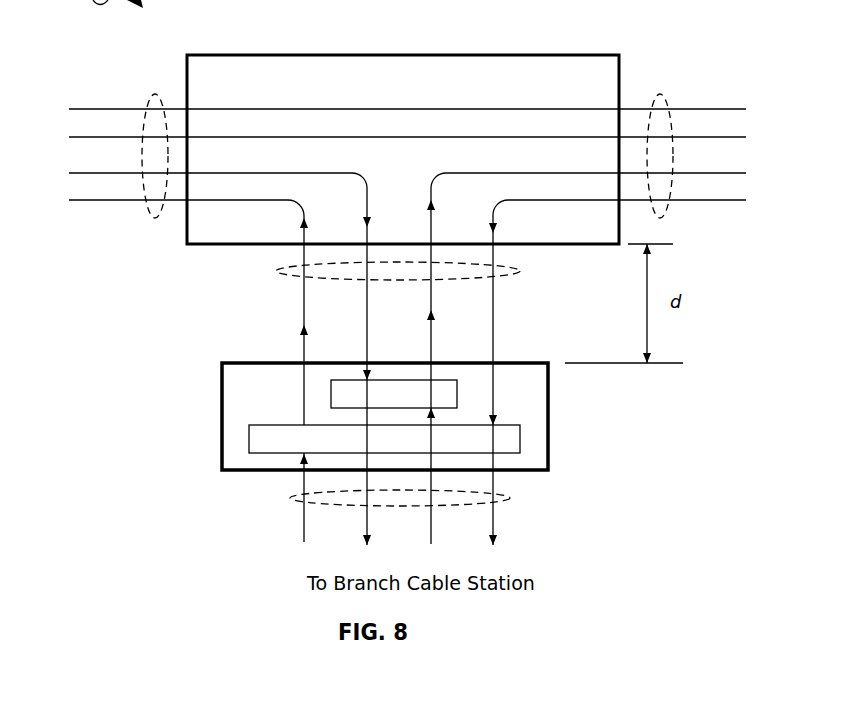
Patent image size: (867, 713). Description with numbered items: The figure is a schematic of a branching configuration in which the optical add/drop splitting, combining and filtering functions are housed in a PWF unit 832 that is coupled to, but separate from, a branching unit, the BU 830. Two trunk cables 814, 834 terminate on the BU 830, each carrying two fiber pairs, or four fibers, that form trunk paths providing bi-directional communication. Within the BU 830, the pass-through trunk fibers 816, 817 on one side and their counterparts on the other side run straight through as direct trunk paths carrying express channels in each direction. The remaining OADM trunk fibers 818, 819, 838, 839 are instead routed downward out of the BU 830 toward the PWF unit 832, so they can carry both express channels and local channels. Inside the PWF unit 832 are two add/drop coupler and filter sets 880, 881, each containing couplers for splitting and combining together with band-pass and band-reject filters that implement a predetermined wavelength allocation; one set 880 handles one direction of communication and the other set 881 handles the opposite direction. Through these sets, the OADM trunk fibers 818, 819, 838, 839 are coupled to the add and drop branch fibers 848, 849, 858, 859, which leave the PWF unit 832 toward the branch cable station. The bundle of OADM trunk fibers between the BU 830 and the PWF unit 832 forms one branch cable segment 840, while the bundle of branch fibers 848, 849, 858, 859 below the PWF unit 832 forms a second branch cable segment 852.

The BU 830 is at (374, 54).
The trunk cable 814 is at (156, 93).
The trunk cable 834 is at (661, 94).
The pass-through trunk fiber 816 is at (88, 108).
The pass-through trunk fiber 817 is at (83, 136).
The OADM trunk fiber 818 is at (92, 172).
The OADM trunk fiber 819 is at (85, 199).
The OADM trunk fiber 838 is at (712, 172).
The OADM trunk fiber 839 is at (714, 199).
The branch cable segment 840 is at (288, 268).
The PWF unit 832 is at (222, 422).
The add/drop coupler and filter set 880 is at (394, 394).
The add/drop coupler and filter set 881 is at (384, 439).
The branch cable segment 852 is at (296, 501).
The branch fiber 859 is at (300, 517).
The branch fiber 848 is at (362, 526).
The branch fiber 858 is at (432, 526).
The branch fiber 849 is at (494, 518).